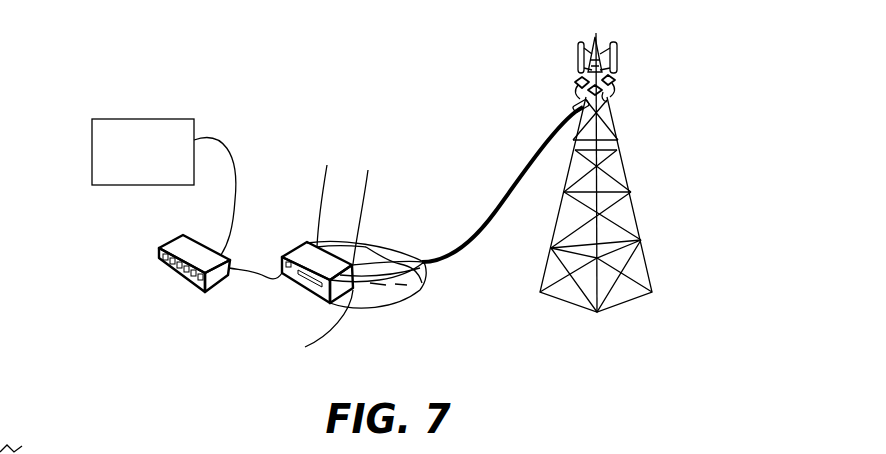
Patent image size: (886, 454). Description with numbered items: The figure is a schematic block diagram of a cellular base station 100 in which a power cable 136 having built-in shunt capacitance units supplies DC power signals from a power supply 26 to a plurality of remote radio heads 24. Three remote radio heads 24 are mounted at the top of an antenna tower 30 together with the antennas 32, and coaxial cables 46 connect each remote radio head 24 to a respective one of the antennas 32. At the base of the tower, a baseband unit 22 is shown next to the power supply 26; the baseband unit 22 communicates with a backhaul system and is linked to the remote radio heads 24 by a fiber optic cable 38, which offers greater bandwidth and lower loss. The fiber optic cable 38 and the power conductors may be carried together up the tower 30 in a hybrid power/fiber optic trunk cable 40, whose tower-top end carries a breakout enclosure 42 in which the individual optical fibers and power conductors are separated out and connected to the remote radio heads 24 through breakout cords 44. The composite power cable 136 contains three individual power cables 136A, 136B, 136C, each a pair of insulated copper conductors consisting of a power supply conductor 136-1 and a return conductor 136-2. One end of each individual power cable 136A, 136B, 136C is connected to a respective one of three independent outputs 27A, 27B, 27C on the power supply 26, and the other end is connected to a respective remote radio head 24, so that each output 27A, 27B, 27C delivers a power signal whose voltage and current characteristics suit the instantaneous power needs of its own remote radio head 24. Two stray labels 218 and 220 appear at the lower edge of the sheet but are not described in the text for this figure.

The cellular base station 100 is at (322, 69).
The baseband unit 22 is at (165, 247).
The remote radio heads 24 is at (617, 81).
The power supply 26 is at (292, 250).
The first output of power supply 27A is at (326, 201).
The second output of power supply 27B is at (369, 209).
The third output of power supply 27C is at (311, 323).
The antenna tower 30 is at (637, 212).
The antennas 32 is at (617, 43).
The fiber optic cable 38 is at (274, 283).
The hybrid power/fiber optic trunk cable 40 is at (521, 167).
The breakout enclosure 42 is at (573, 108).
The breakout cords 44 is at (628, 122).
The coaxial cables 46 is at (605, 48).
The power cable 136 is at (391, 200).
The individual power cable 136A is at (366, 246).
The individual power cable 136B is at (399, 263).
The individual power cable 136C is at (422, 283).
The power supply conductor 136-1 is at (386, 285).
The return conductor 136-2 is at (405, 286).
The reference label 218 is at (25, 446).
The reference label 220 is at (99, 452).